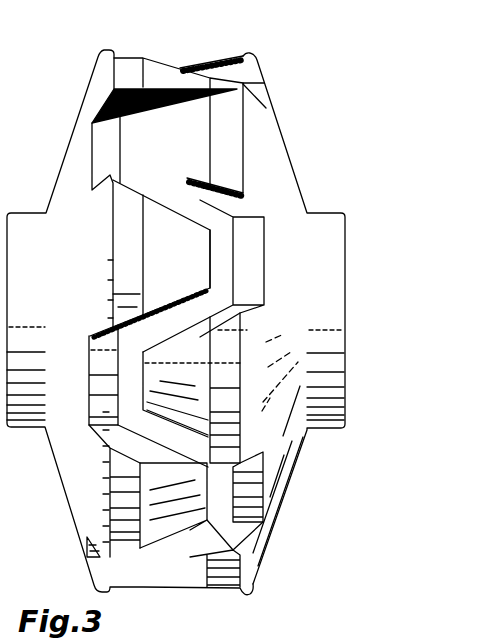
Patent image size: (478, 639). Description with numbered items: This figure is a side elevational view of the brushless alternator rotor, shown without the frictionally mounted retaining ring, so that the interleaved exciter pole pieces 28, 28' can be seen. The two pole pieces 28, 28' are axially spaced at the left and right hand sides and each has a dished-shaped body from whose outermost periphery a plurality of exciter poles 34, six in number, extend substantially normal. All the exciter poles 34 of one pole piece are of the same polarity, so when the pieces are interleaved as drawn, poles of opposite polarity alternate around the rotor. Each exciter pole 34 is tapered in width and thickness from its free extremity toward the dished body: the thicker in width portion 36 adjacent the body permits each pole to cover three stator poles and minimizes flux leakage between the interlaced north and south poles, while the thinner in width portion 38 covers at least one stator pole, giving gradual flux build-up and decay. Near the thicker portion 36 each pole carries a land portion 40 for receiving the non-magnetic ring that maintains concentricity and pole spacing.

The exciter pole piece 28 is at (130, 322).
The exciter pole piece 28' is at (294, 318).
The exciter pole 34 is at (181, 578).
The thicker in width portion 36 is at (127, 275).
The thinner in width portion 38 is at (165, 235).
The land portion 40 is at (126, 72).